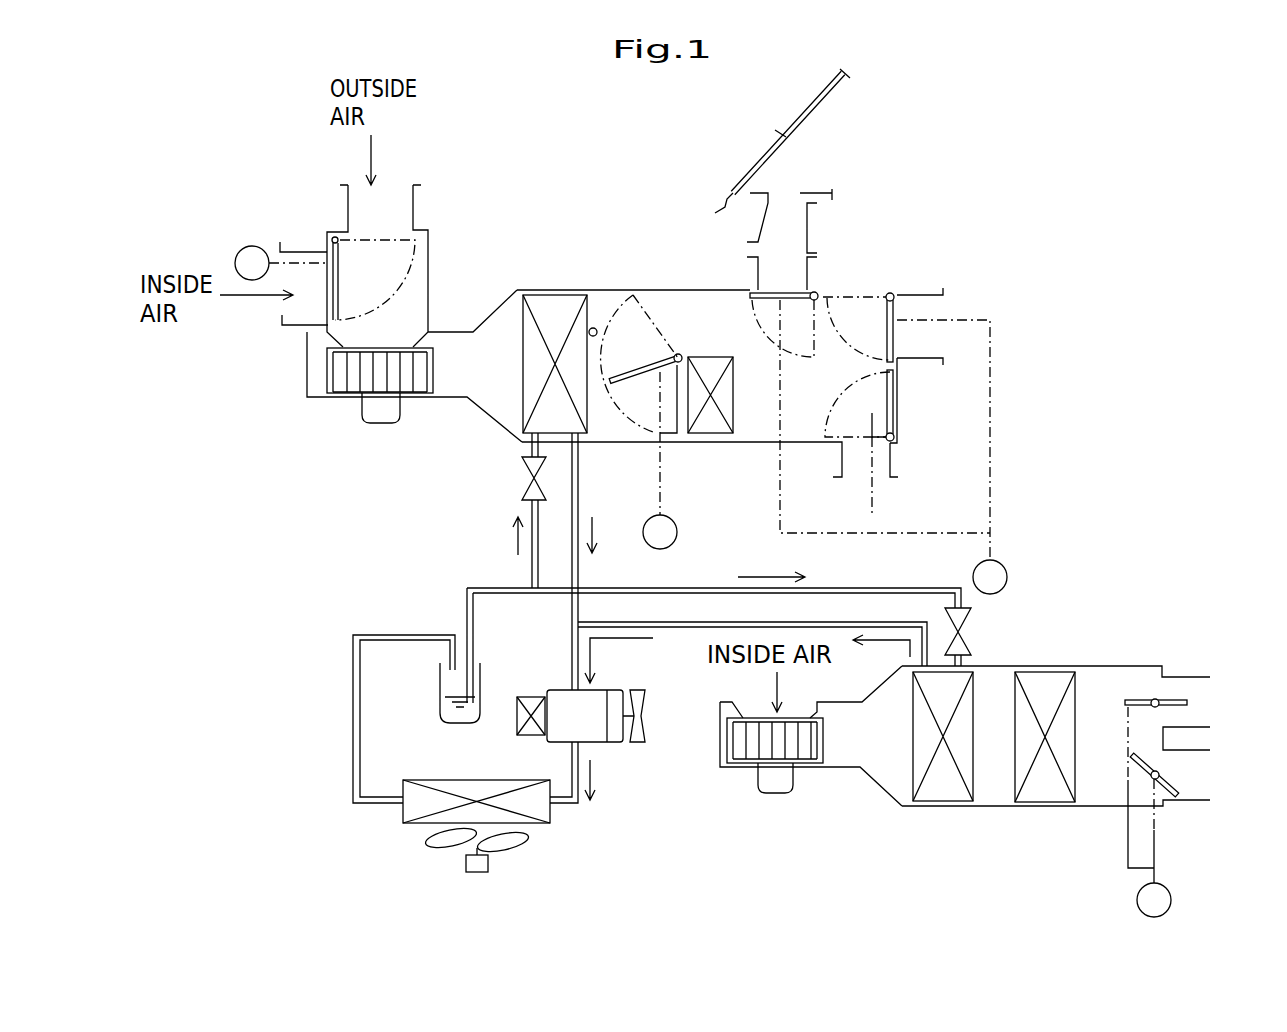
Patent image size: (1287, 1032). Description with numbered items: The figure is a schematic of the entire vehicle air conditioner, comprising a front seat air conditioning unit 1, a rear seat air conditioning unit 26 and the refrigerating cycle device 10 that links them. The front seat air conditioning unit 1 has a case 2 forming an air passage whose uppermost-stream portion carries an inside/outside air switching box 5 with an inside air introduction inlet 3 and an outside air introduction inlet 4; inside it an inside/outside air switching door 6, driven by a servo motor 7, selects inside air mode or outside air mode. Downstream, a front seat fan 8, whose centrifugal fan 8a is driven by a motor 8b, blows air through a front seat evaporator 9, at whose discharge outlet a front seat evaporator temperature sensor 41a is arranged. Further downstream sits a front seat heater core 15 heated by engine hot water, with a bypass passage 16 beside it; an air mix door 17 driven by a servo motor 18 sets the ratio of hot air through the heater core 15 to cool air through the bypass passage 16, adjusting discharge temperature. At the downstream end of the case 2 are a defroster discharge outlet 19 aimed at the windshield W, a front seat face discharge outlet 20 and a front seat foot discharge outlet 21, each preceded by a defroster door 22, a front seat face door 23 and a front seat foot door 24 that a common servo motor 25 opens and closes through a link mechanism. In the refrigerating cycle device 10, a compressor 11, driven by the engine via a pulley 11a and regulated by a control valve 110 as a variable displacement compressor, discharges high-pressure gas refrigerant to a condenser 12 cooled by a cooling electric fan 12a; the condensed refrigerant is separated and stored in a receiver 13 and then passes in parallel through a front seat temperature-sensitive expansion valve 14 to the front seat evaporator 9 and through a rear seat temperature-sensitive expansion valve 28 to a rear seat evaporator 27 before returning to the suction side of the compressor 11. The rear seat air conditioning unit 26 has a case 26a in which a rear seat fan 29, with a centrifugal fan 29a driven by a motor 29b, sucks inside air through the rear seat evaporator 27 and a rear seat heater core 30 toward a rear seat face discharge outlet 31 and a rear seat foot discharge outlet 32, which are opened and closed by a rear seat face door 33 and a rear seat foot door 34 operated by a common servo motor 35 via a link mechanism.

The front seat air conditioning unit 1 is at (634, 281).
The case 2 is at (665, 290).
The inside air introduction inlet 3 is at (302, 303).
The outside air introduction inlet 4 is at (397, 188).
The inside/outside air switching box 5 is at (430, 242).
The inside/outside air switching door 6 is at (342, 292).
The servo motor 7 is at (250, 247).
The front seat fan 8 is at (290, 370).
The centrifugal fan 8a is at (330, 378).
The motor 8b is at (380, 425).
The front seat evaporator 9 is at (550, 297).
The front seat evaporator temperature sensor 41a is at (594, 328).
The front seat heater core 15 is at (737, 403).
The bypass passage 16 is at (700, 313).
The air mix door 17 is at (637, 403).
The servo motor 18 is at (677, 532).
The defroster discharge outlet 19 is at (785, 278).
The front seat face discharge outlet 20 is at (932, 348).
The front seat foot discharge outlet 21 is at (857, 463).
The defroster door 22 is at (768, 287).
The front seat face door 23 is at (893, 335).
The front seat foot door 24 is at (895, 393).
The servo motor 25 is at (1007, 572).
The windshield W is at (803, 114).
The refrigerating cycle device 10 is at (441, 622).
The compressor 11 is at (600, 745).
The pulley 11a is at (637, 745).
The control valve 110 is at (533, 693).
The condenser 12 is at (440, 780).
The cooling electric fan 12a is at (425, 843).
The receiver 13 is at (440, 683).
The front seat temperature-sensitive expansion valve 14 is at (522, 467).
The rear seat temperature-sensitive expansion valve 28 is at (965, 632).
The rear seat air conditioning unit 26 is at (1047, 665).
The case 26a is at (1110, 665).
The rear seat evaporator 27 is at (943, 795).
The rear seat fan 29 is at (713, 757).
The centrifugal fan 29a is at (737, 757).
The motor 29b is at (782, 783).
The rear seat heater core 30 is at (1043, 793).
The rear seat face discharge outlet 31 is at (1192, 692).
The rear seat foot discharge outlet 32 is at (1195, 770).
The rear seat face door 33 is at (1140, 700).
The rear seat foot door 34 is at (1175, 782).
The servo motor 35 is at (1172, 898).